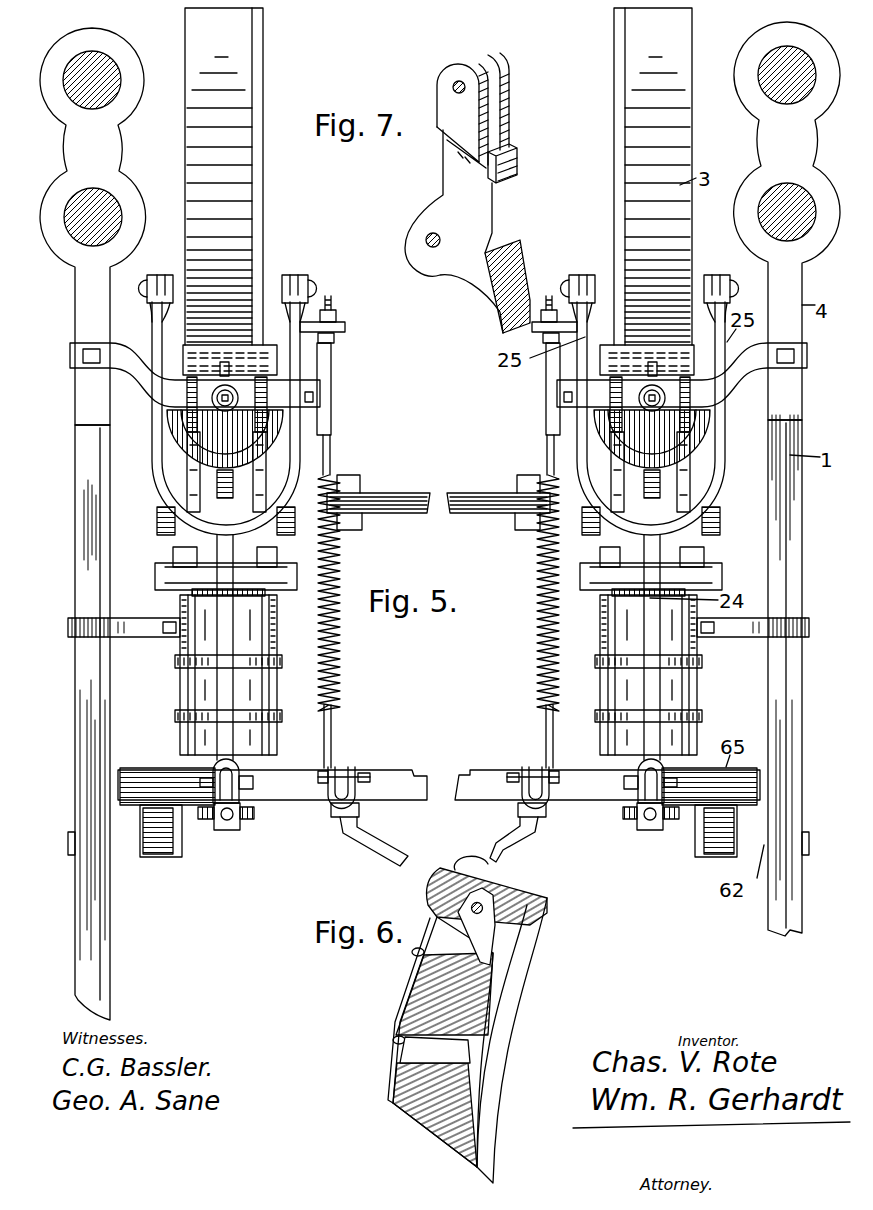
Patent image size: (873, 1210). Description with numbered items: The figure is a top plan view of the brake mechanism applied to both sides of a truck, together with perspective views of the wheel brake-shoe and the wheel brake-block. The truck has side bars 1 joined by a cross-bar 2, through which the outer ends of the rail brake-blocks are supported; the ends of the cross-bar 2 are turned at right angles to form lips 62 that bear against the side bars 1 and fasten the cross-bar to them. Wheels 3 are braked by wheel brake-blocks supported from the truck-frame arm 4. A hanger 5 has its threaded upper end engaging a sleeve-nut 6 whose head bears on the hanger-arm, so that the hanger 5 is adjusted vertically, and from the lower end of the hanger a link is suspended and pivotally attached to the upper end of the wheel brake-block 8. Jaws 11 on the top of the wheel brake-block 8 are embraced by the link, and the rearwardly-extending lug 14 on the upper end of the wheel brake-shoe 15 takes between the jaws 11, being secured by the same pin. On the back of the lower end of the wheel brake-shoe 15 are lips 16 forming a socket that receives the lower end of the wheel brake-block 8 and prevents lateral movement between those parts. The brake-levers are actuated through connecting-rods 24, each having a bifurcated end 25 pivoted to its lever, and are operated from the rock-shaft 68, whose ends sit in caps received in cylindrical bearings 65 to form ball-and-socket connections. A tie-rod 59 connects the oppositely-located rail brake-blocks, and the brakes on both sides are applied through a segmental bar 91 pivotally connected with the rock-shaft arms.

In FIG. 5, the side bars 1 is at (80, 688).
In FIG. 5, the cross-bar 2 is at (460, 772).
In FIG. 5, the wheels 3 is at (247, 188).
In FIG. 5, the truck-frame arm 4 is at (78, 319).
In FIG. 5, the hanger 5 is at (666, 398).
In FIG. 5, the sleeve-nut 6 is at (211, 398).
In FIG. 7, the wheel brake-block 8 is at (500, 208).
In FIG. 7, the jaws 11 is at (443, 83).
In FIG. 6, the lug 14 is at (437, 892).
In FIG. 6, the wheel brake-shoe 15 is at (500, 1010).
In FIG. 6, the lips 16 is at (400, 1073).
In FIG. 5, the connecting-rod 24 is at (222, 641).
In FIG. 5, the bifurcated end 25 is at (153, 470).
In FIG. 5, the tie-rod 59 is at (500, 494).
In FIG. 5, the lips 62 is at (128, 850).
In FIG. 5, the cylindrical bearing 65 is at (157, 769).
In FIG. 5, the rock-shaft 68 is at (498, 773).
In FIG. 5, the segmental bar 91 is at (507, 838).